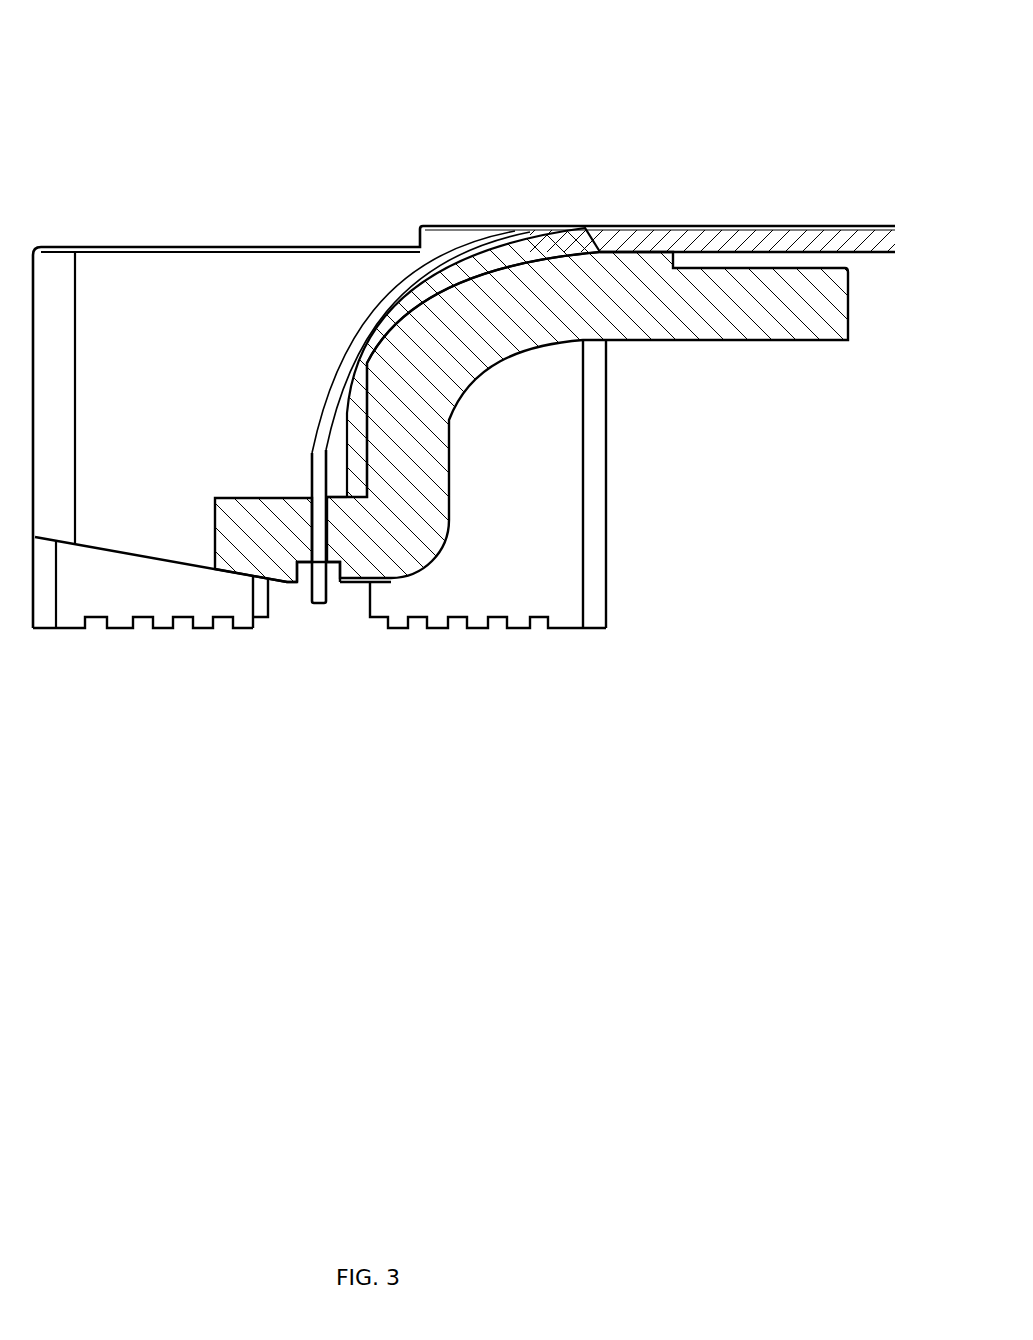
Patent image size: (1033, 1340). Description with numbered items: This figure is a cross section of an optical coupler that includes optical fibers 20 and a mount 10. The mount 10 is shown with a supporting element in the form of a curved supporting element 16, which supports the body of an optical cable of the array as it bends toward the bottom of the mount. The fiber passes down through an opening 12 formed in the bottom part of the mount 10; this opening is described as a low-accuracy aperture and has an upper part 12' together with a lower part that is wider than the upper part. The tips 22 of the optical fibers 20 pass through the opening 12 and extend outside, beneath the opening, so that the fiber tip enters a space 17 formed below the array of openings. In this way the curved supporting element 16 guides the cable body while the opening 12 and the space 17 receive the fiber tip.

The mount 10 is at (133, 338).
The aperture 12 is at (473, 542).
The upper part 12' is at (236, 527).
The curved supporting element 16 is at (587, 403).
The space 17 is at (282, 615).
The optical fibers 20 is at (587, 223).
The tips 22 is at (313, 483).